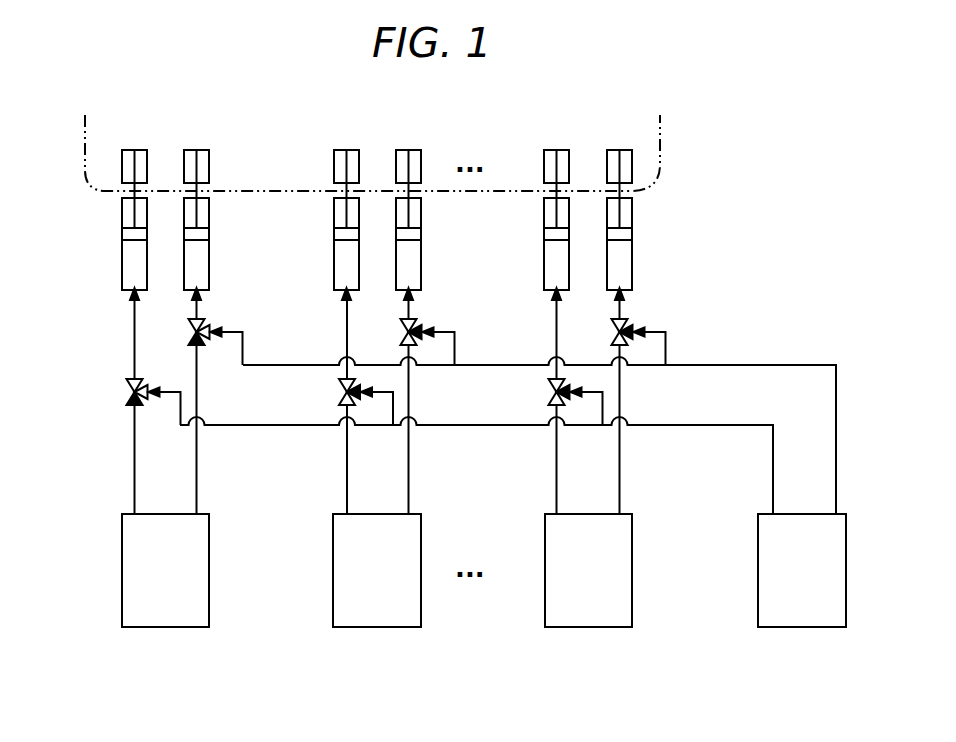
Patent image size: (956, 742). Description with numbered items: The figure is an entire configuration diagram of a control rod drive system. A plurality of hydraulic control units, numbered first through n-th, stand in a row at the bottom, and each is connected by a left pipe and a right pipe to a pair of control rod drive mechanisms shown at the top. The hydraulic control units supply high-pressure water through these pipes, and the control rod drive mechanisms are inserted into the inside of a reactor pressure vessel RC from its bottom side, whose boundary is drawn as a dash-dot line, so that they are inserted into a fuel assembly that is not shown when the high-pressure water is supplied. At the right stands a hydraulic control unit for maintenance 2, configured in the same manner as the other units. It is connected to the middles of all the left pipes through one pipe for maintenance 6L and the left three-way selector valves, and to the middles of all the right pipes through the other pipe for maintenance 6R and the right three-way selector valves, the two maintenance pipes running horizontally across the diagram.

The hydraulic control unit for maintenance 2 is at (804, 628).
The pipe for maintenance 6L is at (745, 427).
The pipe for maintenance 6R is at (777, 365).
The reactor pressure vessel RC is at (662, 140).